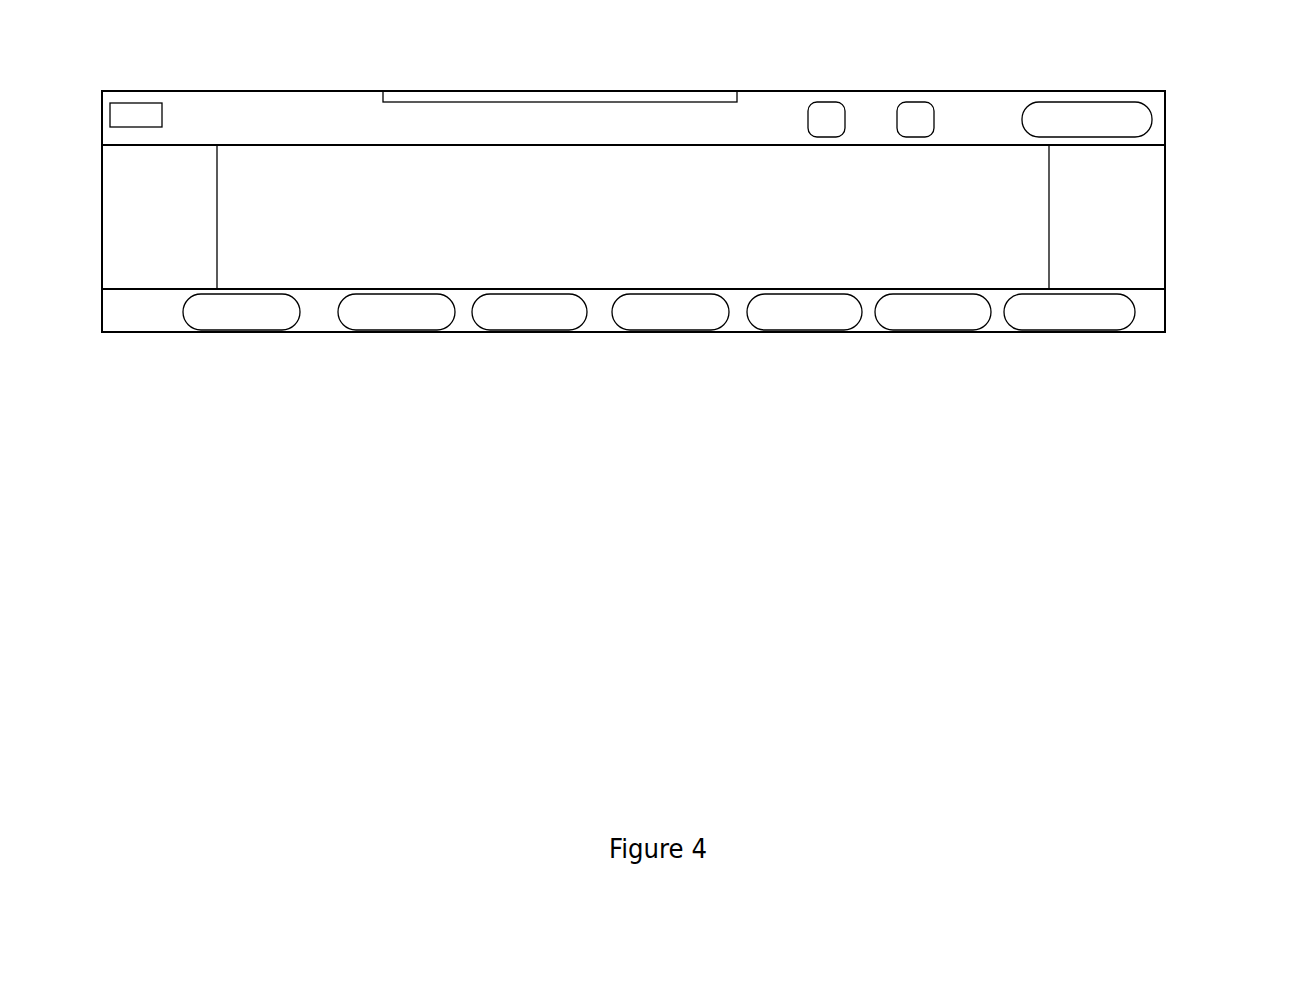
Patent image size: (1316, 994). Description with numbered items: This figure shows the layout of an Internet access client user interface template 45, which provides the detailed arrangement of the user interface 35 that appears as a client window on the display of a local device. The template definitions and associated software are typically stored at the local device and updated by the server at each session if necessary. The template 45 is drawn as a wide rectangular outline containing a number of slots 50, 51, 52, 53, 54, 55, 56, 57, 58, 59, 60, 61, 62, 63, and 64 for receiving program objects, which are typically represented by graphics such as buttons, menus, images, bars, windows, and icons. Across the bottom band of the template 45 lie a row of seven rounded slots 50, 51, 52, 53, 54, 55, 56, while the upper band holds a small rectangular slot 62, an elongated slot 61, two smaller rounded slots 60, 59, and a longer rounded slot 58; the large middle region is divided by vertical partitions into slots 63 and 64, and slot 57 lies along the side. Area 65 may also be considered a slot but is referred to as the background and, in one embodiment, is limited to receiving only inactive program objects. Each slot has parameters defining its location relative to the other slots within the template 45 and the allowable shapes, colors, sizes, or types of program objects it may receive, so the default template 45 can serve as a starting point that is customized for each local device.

The user interface 35 is at (1022, 92).
The Internet access client user interface template 45 is at (1176, 241).
The slot 50 is at (222, 330).
The slot 51 is at (395, 332).
The slot 52 is at (530, 332).
The slot 53 is at (670, 332).
The slot 54 is at (803, 332).
The slot 55 is at (933, 332).
The slot 56 is at (1105, 328).
The slot 57 is at (1155, 273).
The slot 58 is at (1087, 102).
The slot 59 is at (913, 102).
The slot 60 is at (829, 102).
The slot 61 is at (560, 91).
The slot 62 is at (137, 103).
The slot 63 is at (180, 168).
The slot 64 is at (290, 160).
The background 65 is at (763, 110).